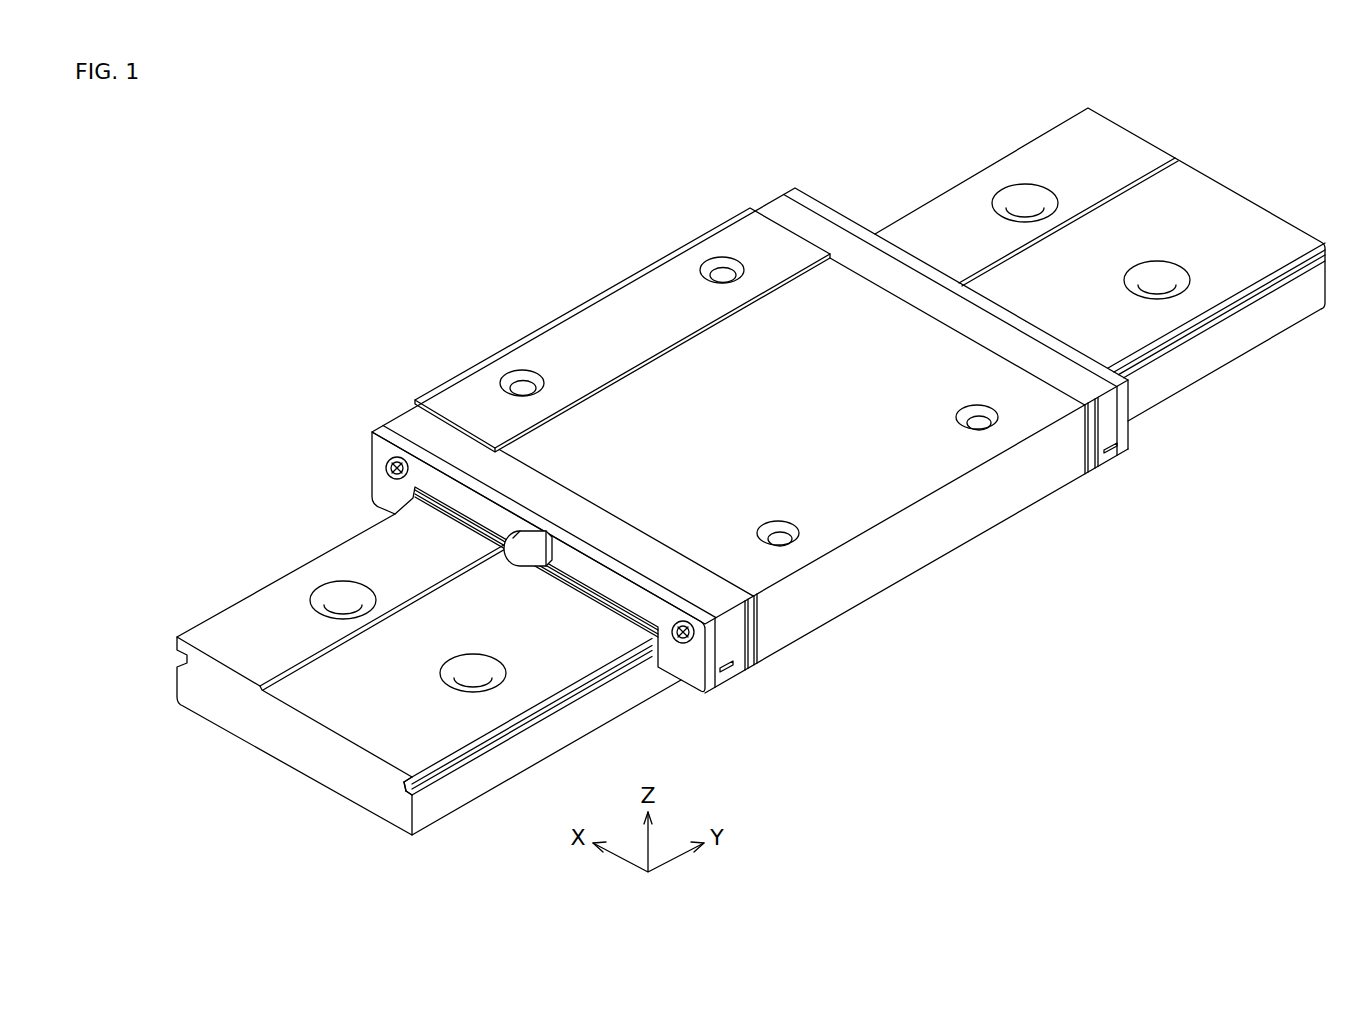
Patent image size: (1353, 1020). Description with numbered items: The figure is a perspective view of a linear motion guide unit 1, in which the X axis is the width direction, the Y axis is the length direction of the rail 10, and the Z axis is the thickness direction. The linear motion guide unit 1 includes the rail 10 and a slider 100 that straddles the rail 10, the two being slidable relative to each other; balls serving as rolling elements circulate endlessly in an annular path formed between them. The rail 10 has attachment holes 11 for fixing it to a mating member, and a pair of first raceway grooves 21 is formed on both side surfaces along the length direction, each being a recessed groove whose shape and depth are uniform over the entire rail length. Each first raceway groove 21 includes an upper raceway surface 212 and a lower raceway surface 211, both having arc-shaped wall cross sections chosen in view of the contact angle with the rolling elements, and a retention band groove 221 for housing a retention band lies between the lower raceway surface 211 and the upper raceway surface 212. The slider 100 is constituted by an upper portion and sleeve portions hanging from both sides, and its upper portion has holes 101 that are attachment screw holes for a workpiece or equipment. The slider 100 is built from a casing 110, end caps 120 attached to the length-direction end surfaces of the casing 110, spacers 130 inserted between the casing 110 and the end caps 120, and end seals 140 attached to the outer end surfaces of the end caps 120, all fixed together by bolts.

The linear motion guide unit 1 is at (741, 121).
The rail 10 is at (217, 705).
The attachment holes 11 is at (1015, 202).
The first raceway grooves 21 is at (182, 659).
The lower raceway surface 211 is at (407, 807).
The upper raceway surface 212 is at (407, 778).
The retention band groove 221 is at (403, 790).
The slider 100 is at (1193, 476).
The holes 101 is at (518, 375).
The casing 110 is at (920, 557).
The end caps 120 is at (744, 657).
The spacers 130 is at (757, 627).
The end seals 140 is at (688, 675).